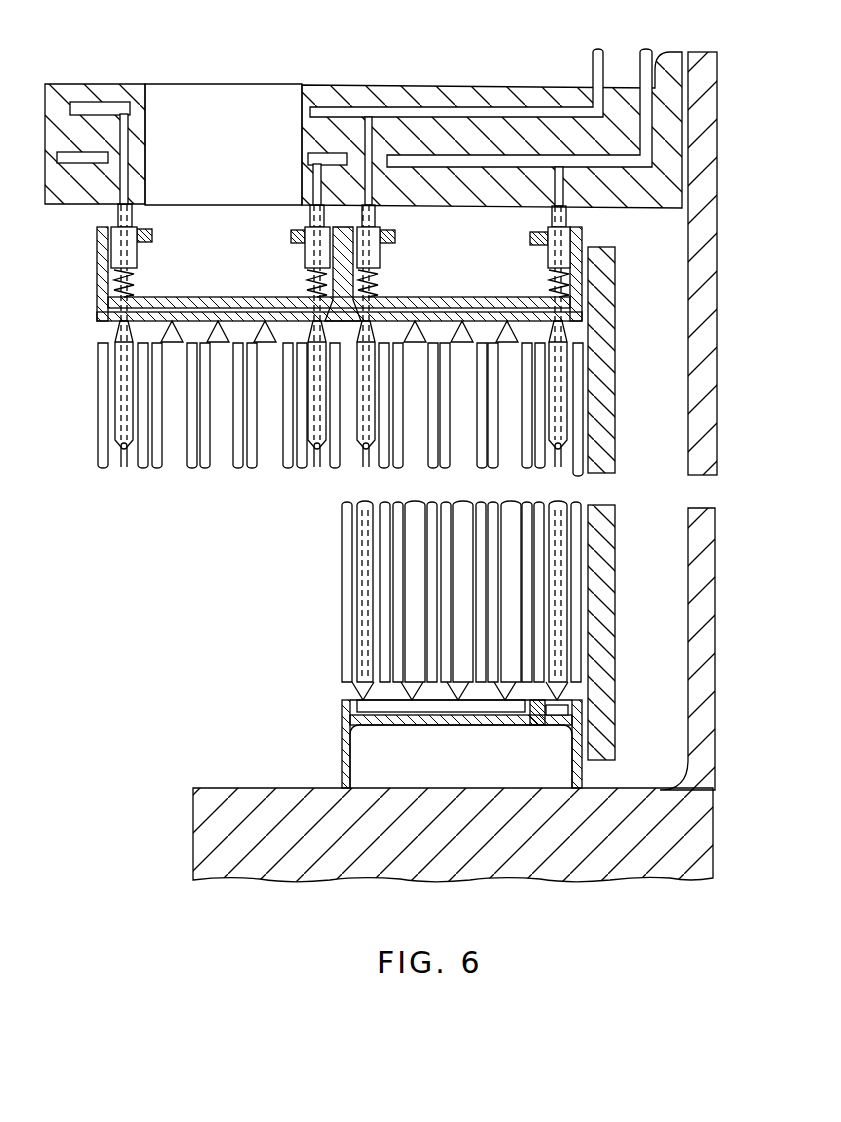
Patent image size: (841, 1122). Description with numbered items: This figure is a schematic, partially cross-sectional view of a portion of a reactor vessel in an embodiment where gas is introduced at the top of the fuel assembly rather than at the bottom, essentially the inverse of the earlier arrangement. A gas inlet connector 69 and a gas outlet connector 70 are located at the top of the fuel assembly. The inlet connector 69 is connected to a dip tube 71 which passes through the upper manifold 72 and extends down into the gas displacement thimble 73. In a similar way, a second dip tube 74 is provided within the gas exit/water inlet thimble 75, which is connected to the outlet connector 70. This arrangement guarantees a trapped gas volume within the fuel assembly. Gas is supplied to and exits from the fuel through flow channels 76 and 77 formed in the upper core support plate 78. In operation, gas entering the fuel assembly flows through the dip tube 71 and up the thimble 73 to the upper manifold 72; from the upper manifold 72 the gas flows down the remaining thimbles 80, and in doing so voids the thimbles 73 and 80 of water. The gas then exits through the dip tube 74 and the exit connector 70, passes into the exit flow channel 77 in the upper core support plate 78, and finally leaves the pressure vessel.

The gas inlet connector 69 is at (548, 262).
The gas outlet connector 70 is at (380, 262).
The dip tube 71 is at (560, 380).
The upper manifold 72 is at (437, 297).
The gas displacement thimble 73 is at (563, 445).
The dip tube 74 is at (366, 622).
The gas exit/water inlet thimble 75 is at (357, 548).
The flow channel 76 is at (626, 170).
The exit flow channel 77 is at (480, 107).
The upper core support plate 78 is at (673, 62).
The remaining thimbles 80 is at (465, 462).